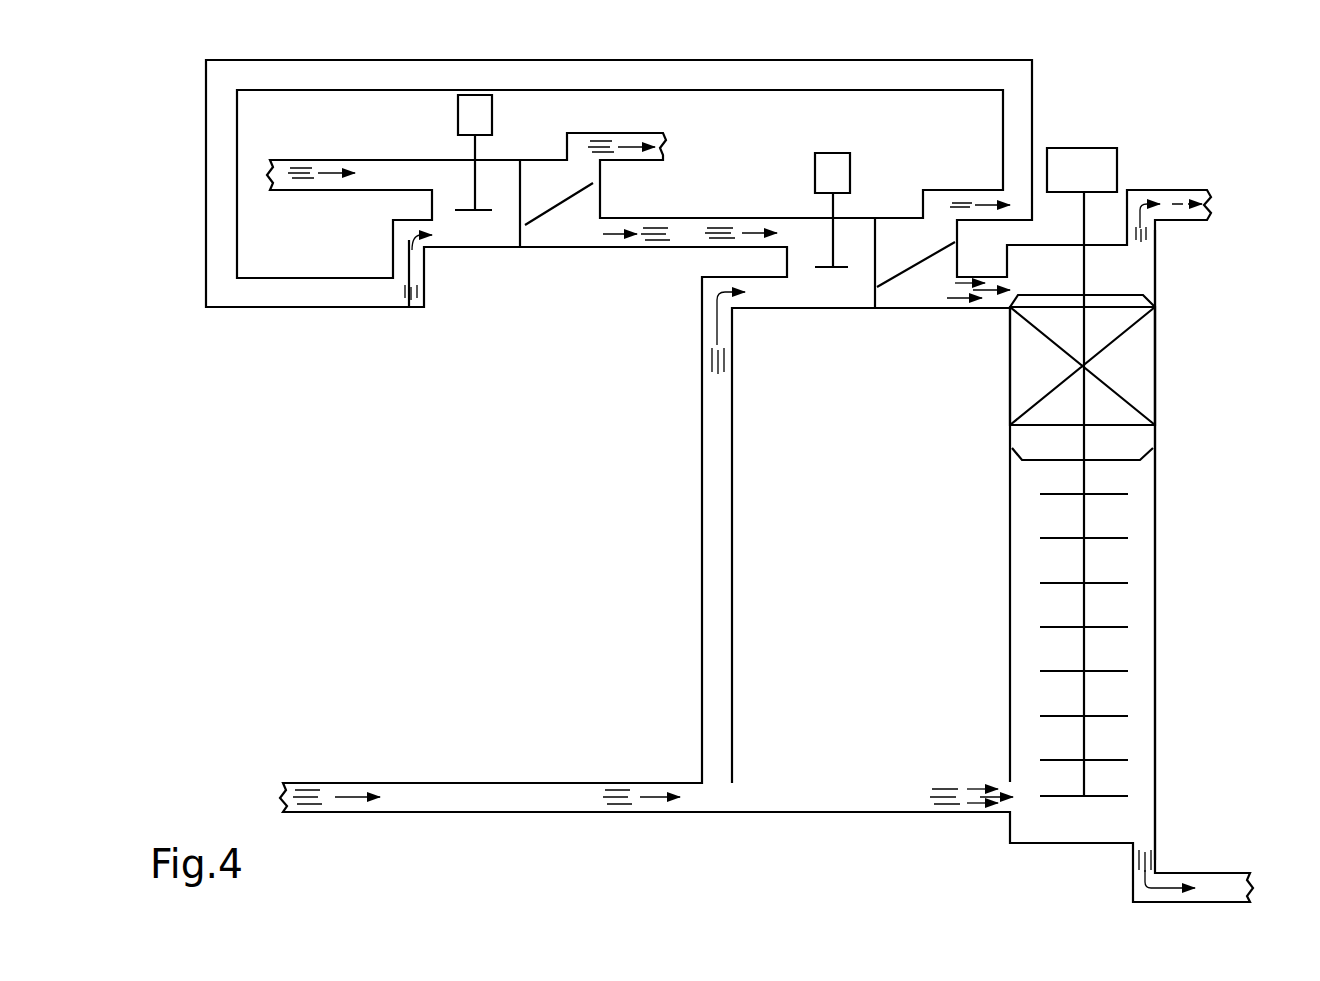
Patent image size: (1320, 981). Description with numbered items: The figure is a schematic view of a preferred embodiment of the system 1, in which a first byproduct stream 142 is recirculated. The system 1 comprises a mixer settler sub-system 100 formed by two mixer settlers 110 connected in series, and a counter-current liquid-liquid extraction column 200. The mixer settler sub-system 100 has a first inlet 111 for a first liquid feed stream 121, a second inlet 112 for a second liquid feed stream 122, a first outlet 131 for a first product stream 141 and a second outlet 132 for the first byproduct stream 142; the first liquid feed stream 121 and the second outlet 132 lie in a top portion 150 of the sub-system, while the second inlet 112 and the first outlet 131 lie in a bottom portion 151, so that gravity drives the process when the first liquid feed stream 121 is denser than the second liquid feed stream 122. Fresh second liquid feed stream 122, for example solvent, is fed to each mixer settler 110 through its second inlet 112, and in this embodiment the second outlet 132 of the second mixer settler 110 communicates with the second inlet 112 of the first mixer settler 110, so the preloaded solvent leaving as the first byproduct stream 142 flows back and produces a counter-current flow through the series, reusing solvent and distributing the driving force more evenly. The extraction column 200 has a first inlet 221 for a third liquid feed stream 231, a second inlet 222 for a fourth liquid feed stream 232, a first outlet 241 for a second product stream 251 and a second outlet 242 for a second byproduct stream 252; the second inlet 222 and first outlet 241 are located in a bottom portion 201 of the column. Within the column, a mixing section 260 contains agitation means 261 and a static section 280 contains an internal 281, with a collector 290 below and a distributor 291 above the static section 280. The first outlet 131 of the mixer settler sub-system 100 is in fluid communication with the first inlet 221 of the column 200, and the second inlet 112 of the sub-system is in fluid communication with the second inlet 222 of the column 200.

The system 1 is at (192, 515).
The mixer settler sub-system 100 is at (817, 316).
The mixer settler 110 is at (533, 248).
The first inlet 111 is at (428, 178).
The second inlet 112 is at (430, 237).
The first liquid feed stream 121 is at (300, 173).
The second liquid feed stream 122 is at (413, 307).
The first outlet 131 is at (603, 237).
The second outlet 132 is at (580, 152).
The first product stream 141 is at (650, 228).
The first byproduct stream 142 is at (600, 142).
The top portion 150 is at (537, 177).
The bottom portion 151 is at (567, 218).
The counter-current liquid-liquid extraction column 200 is at (1166, 622).
The bottom portion 201 is at (1127, 273).
The first inlet 221 is at (1007, 283).
The second inlet 222 is at (1013, 790).
The third liquid feed stream 231 is at (993, 297).
The fourth liquid feed stream 232 is at (948, 800).
The first outlet 241 is at (1143, 843).
The second outlet 242 is at (1147, 200).
The second product stream 251 is at (1143, 867).
The second byproduct stream 252 is at (1148, 237).
The mixing section 260 is at (1135, 563).
The agitation means 261 is at (1107, 537).
The static section 280 is at (1133, 373).
The internal 281 is at (1127, 330).
The collector 290 is at (1047, 460).
The distributor 291 is at (1117, 293).